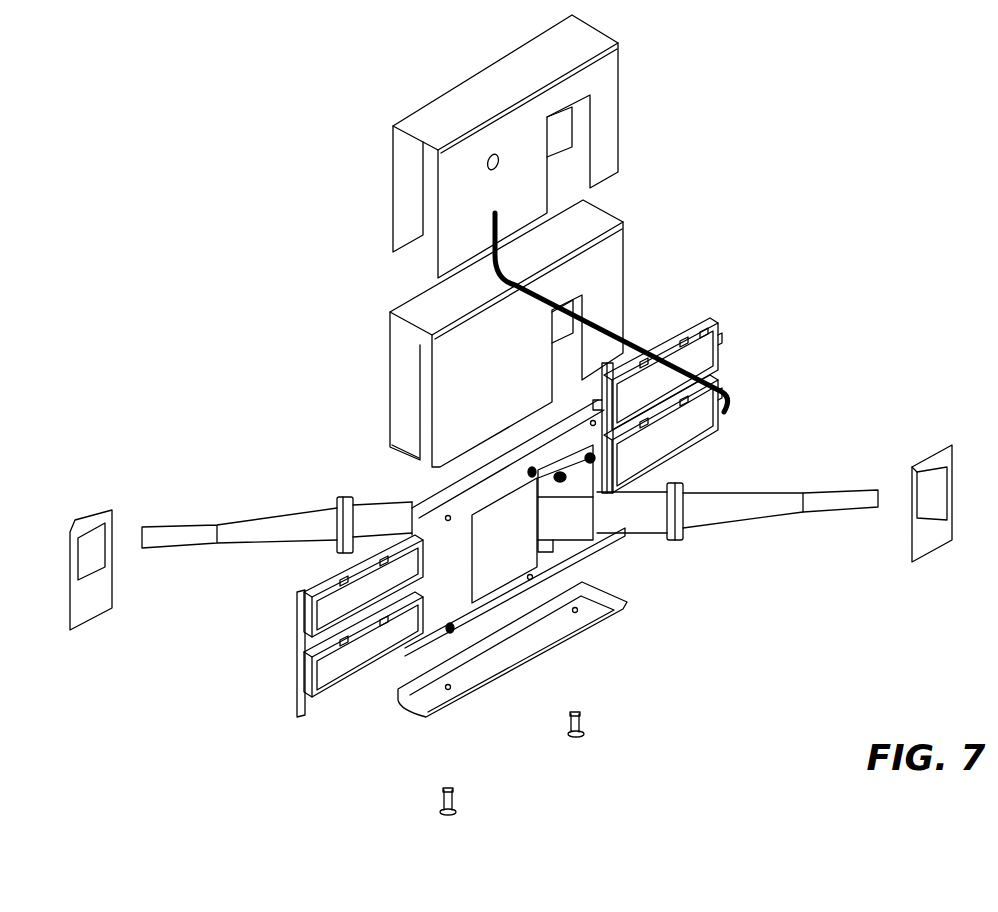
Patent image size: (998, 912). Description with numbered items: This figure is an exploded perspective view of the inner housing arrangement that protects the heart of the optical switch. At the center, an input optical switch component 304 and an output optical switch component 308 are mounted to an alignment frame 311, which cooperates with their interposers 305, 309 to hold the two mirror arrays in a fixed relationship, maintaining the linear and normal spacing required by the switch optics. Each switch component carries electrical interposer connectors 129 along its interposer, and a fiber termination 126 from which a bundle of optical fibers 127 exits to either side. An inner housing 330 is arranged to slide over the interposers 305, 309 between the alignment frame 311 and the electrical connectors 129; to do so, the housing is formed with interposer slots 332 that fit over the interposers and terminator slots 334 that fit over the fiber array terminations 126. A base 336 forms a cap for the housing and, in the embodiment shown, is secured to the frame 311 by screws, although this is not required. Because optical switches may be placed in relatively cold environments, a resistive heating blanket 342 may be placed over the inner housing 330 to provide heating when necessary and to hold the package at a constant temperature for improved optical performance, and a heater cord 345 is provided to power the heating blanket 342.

The resistive heating blanket 342 is at (610, 98).
The inner housing 330 is at (400, 378).
The interposer slots 332 is at (410, 462).
The heater cord 345 is at (648, 348).
The alignment frame 311 is at (428, 497).
The terminator slots 334 is at (600, 398).
The fiber termination 126 is at (580, 527).
The optical fibers 127 is at (840, 502).
The electrical interposer connectors 129 is at (297, 605).
The input optical switch component 304 is at (296, 741).
The interposer 305 is at (446, 636).
The output optical switch component 308 is at (740, 369).
The interposer 309 is at (716, 323).
The base 336 is at (512, 665).